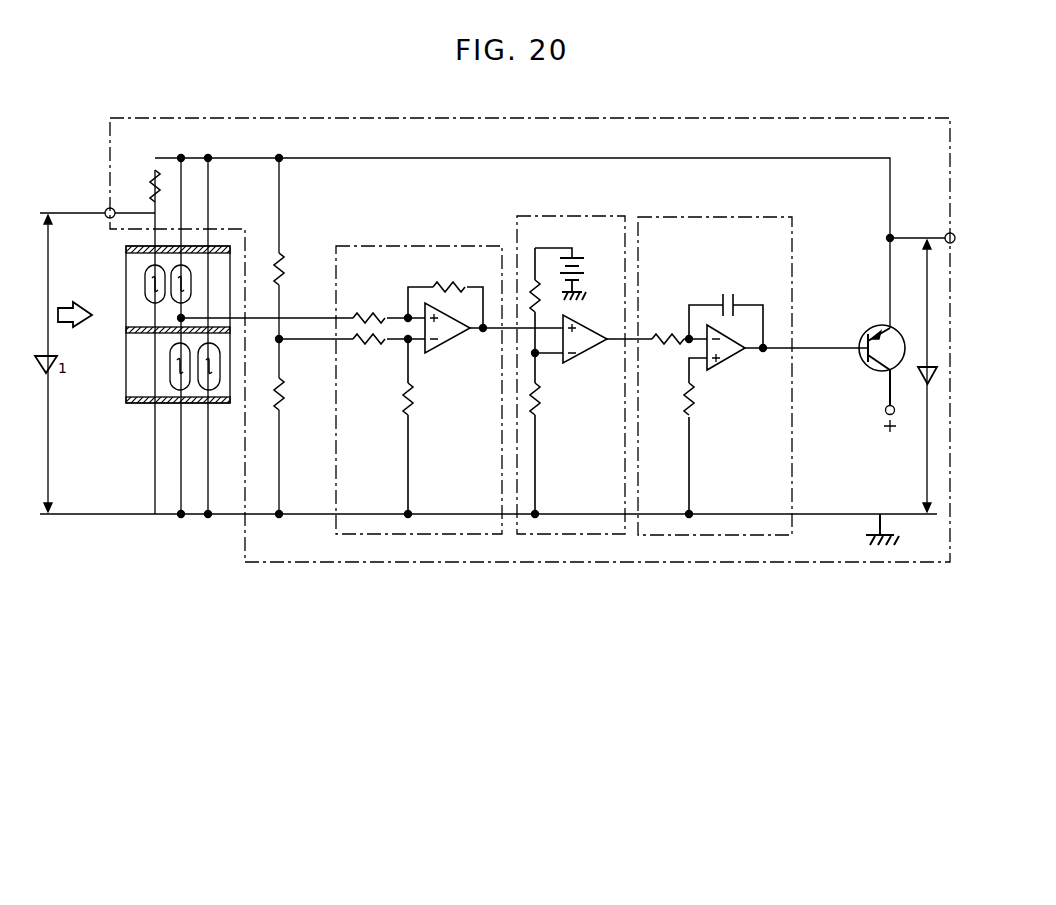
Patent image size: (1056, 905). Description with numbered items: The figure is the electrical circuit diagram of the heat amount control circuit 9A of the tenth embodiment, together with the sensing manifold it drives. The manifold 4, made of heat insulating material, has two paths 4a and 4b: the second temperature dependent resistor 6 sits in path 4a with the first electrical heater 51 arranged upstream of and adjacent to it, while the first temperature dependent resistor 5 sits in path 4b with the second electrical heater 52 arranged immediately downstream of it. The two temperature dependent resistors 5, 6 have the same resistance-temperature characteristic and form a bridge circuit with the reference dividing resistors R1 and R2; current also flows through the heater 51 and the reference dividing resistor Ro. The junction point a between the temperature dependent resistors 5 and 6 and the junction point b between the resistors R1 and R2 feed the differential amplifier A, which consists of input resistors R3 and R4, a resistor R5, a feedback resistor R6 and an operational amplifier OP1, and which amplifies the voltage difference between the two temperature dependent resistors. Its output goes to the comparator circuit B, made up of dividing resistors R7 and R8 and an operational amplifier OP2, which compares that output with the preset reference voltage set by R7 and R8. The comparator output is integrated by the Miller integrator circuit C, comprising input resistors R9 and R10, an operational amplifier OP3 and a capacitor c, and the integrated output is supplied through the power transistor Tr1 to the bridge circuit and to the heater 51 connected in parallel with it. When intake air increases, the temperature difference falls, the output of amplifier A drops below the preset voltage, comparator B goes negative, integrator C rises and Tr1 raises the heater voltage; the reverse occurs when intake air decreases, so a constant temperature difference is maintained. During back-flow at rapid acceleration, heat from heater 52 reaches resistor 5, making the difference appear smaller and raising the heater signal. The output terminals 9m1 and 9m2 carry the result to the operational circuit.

The heat amount control circuit 9A is at (856, 118).
The reference dividing resistor Ro is at (152, 179).
The output terminal 9m2 is at (106, 209).
The output terminal 9m1 is at (955, 242).
The manifold 4 is at (185, 332).
The path 4a is at (232, 249).
The path 4b is at (230, 388).
The electrical heater 51 is at (145, 290).
The second temperature dependent resistor 6 is at (192, 292).
The first temperature dependent resistor 5 is at (169, 371).
The second electrical heater 52 is at (220, 363).
The junction point a is at (180, 318).
The junction point b is at (282, 342).
The reference dividing resistor R1 is at (285, 270).
The reference dividing resistor R2 is at (284, 395).
The differential amplifier A is at (397, 246).
The input resistor R3 is at (365, 312).
The input resistor R4 is at (370, 345).
The resistor R5 is at (414, 400).
The feedback resistor R6 is at (456, 284).
The operational amplifier OP1 is at (448, 347).
The comparator circuit B is at (598, 216).
The dividing resistor R7 is at (534, 284).
The dividing resistor R8 is at (543, 400).
The operational amplifier OP2 is at (583, 350).
The Miller integrator circuit C is at (760, 217).
The input resistor R9 is at (662, 334).
The input resistor R10 is at (697, 405).
The capacitor c is at (727, 294).
The operational amplifier OP3 is at (733, 359).
The power transistor Tr1 is at (874, 326).